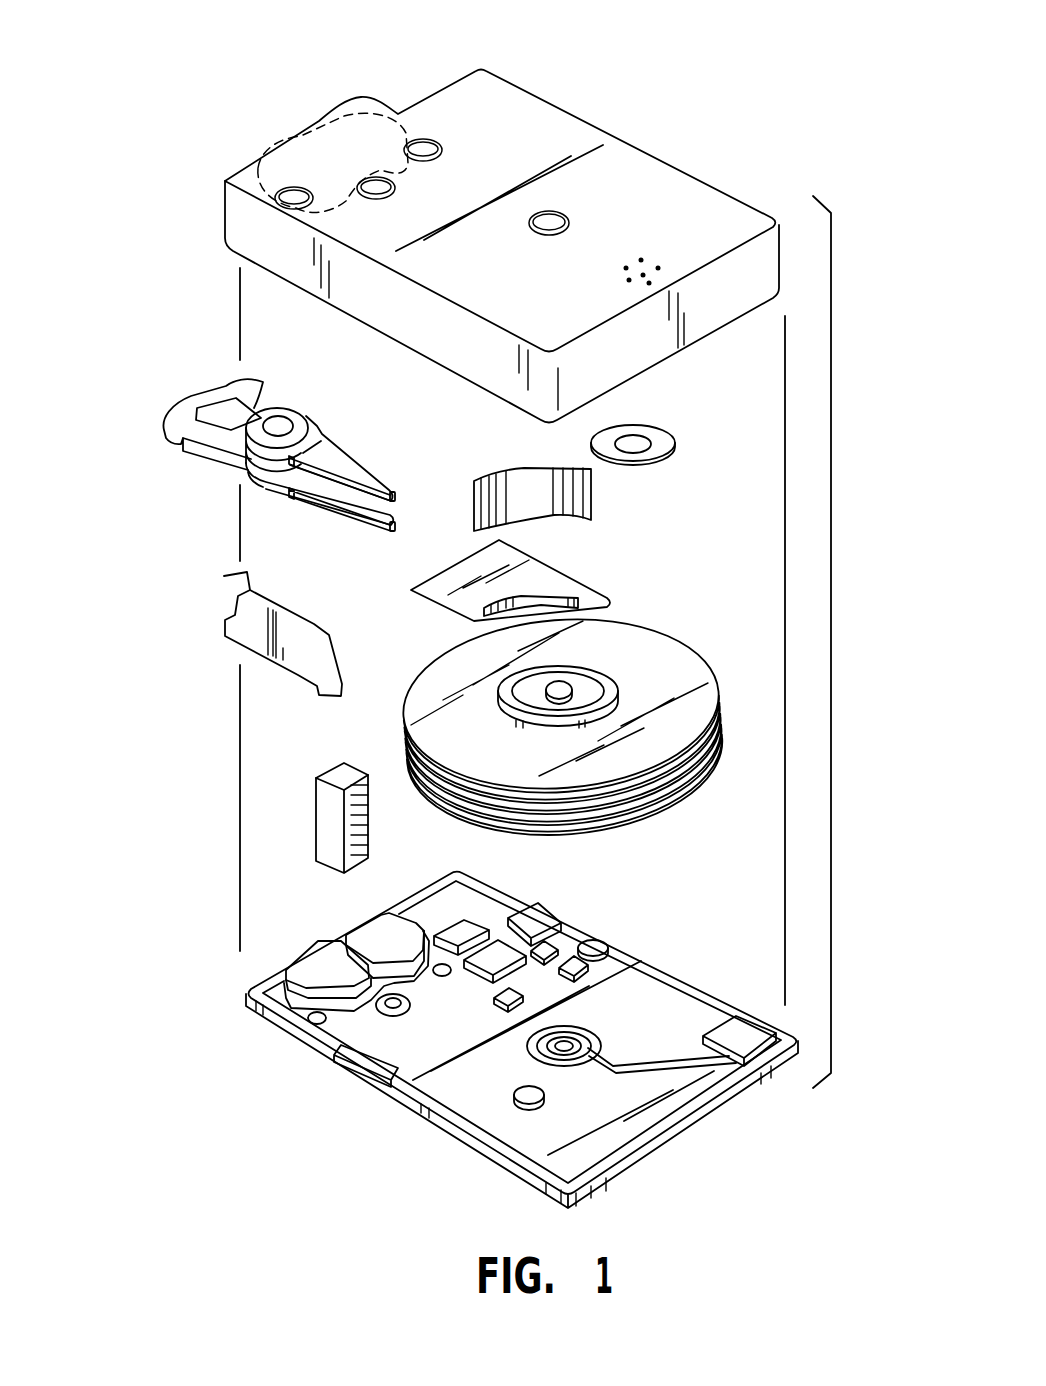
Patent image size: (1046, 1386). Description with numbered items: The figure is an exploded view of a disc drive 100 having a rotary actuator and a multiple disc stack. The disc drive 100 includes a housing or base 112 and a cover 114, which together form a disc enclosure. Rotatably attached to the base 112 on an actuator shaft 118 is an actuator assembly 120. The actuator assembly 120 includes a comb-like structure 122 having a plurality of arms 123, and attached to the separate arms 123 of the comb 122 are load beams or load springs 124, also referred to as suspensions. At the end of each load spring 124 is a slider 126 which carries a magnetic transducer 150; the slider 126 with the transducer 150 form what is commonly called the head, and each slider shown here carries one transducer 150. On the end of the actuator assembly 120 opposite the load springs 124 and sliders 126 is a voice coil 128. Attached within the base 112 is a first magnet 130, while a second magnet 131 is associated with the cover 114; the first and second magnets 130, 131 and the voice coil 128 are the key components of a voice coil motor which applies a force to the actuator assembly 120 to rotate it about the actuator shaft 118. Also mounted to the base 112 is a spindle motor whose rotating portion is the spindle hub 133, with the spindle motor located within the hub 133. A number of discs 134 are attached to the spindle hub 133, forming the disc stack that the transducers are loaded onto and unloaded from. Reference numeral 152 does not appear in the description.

The disc drive 100 is at (656, 84).
The base 112 is at (470, 1040).
The cover 114 is at (502, 246).
The actuator shaft 118 is at (272, 415).
The actuator assembly 120 is at (284, 442).
The comb-like structure 122 is at (301, 503).
The arms 123 is at (313, 418).
The load beams 124 is at (359, 473).
The slider 126 is at (392, 494).
The voice coil 128 is at (188, 403).
The first magnet 130 is at (296, 958).
The second magnet 131 is at (328, 128).
The spindle hub 133 is at (563, 686).
The discs 134 is at (583, 712).
The magnetic transducer 150 is at (394, 503).
The transducer head 152 is at (394, 520).